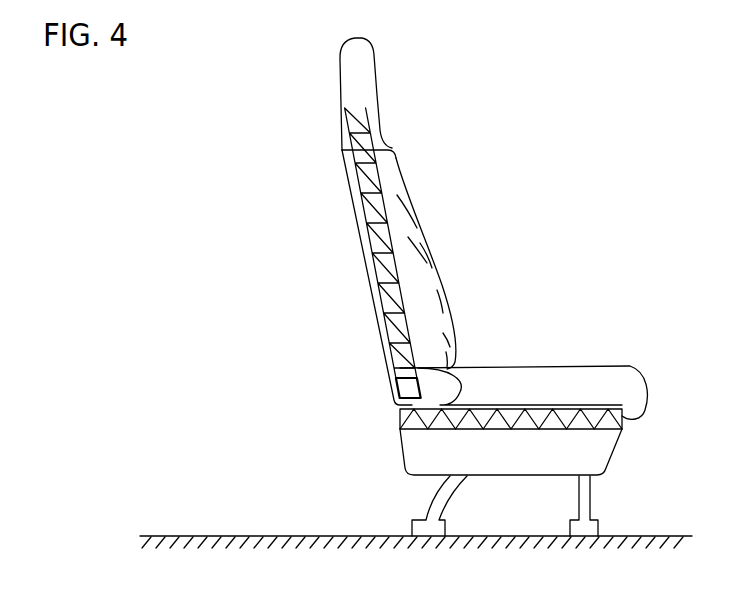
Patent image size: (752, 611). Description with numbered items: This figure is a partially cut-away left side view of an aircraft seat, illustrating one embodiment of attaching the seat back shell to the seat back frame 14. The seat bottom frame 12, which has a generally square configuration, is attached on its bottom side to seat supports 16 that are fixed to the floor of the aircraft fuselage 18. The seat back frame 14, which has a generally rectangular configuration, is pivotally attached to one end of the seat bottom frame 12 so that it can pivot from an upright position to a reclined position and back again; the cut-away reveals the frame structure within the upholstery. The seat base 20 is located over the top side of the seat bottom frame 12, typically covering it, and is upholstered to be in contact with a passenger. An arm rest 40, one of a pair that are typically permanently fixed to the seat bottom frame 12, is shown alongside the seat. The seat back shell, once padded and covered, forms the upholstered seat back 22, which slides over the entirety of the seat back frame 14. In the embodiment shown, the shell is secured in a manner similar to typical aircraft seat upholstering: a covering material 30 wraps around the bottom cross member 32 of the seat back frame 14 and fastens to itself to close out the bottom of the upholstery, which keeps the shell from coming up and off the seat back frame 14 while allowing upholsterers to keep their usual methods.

The seat bottom frame 12 is at (627, 423).
The seat back frame 14 is at (350, 108).
The seat supports 16 is at (428, 523).
The aircraft fuselage 18 is at (371, 546).
The seat base 20 is at (627, 378).
The upholstered seat back 22 is at (377, 118).
The covering material 30 is at (377, 318).
The bottom cross member 32 is at (401, 412).
The arm rest 40 is at (477, 305).